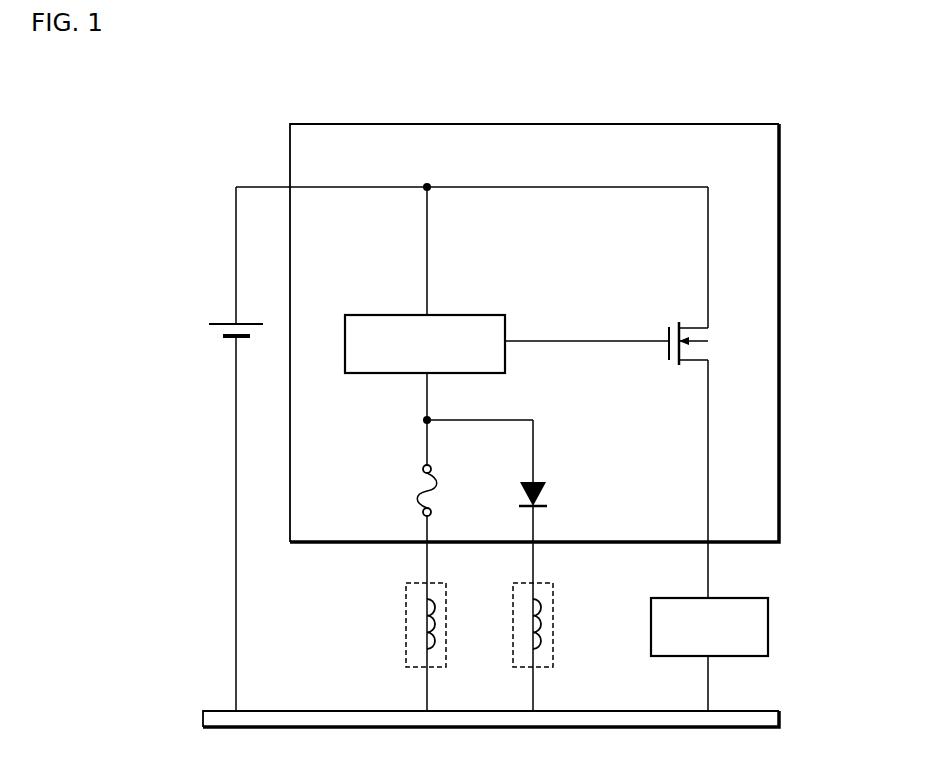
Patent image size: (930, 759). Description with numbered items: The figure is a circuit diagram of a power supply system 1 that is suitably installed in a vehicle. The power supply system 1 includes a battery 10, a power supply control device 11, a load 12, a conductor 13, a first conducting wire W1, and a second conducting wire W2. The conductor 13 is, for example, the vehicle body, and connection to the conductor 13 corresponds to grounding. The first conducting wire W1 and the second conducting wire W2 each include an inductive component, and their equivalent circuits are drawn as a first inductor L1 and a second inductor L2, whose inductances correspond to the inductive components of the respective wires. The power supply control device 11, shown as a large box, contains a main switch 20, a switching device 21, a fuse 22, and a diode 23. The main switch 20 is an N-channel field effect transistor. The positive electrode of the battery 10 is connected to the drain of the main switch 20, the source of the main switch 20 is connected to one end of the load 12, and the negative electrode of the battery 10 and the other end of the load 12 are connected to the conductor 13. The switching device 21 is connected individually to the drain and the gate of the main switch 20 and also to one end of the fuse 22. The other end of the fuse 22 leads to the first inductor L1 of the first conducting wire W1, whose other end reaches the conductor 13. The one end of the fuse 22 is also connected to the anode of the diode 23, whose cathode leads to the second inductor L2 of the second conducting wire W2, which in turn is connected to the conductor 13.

The power supply system 1 is at (797, 86).
The battery 10 is at (213, 337).
The power supply control device 11 is at (377, 124).
The load 12 is at (730, 597).
The conductor 13 is at (758, 711).
The main switch 20 is at (673, 320).
The switching device 21 is at (458, 315).
The fuse 22 is at (417, 490).
The diode 23 is at (553, 489).
The first conducting wire W1 is at (406, 587).
The second conducting wire W2 is at (553, 588).
The first inductor L1 is at (427, 620).
The second inductor L2 is at (548, 621).